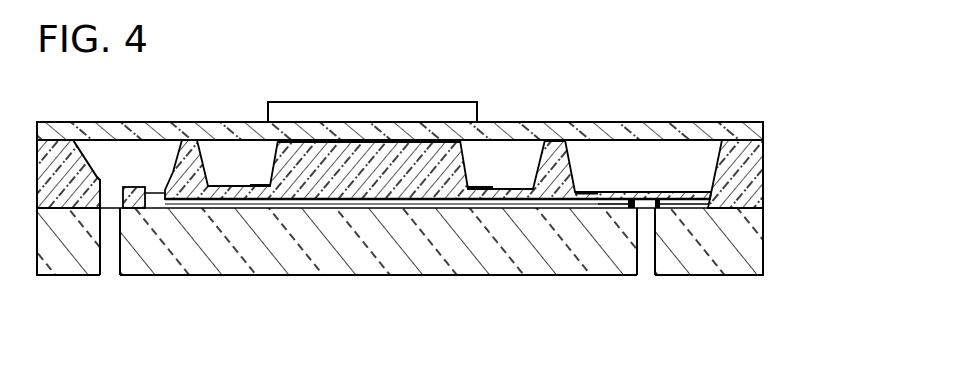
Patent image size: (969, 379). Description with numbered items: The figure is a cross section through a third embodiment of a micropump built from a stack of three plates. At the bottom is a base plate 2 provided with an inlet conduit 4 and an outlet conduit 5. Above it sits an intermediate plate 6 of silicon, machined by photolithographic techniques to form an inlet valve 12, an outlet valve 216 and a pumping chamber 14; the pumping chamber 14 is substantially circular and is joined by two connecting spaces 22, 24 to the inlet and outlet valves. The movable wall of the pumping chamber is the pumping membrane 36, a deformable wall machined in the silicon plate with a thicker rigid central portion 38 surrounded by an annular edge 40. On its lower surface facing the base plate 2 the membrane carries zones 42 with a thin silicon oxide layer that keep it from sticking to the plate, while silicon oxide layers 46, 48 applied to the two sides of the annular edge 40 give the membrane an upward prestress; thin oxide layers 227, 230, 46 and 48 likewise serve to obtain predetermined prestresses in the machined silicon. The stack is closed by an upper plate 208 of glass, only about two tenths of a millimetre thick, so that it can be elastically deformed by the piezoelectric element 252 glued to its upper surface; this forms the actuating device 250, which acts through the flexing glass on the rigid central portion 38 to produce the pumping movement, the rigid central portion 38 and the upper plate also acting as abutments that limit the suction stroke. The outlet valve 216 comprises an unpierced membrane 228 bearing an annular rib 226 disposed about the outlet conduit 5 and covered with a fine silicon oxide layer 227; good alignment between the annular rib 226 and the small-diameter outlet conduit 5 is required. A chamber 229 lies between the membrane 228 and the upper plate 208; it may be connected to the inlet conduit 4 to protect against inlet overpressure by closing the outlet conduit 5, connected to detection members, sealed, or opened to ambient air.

The base plate 2 is at (450, 242).
The inlet conduit 4 is at (110, 255).
The outlet conduit 5 is at (648, 262).
The intermediate plate 6 is at (768, 170).
The inlet valve 12 is at (156, 203).
The pumping chamber 14 is at (335, 209).
The connecting space 22 is at (172, 212).
The connecting space 24 is at (606, 213).
The pumping membrane 36 is at (470, 192).
The rigid central portion 38 is at (415, 168).
The annular edge 40 is at (527, 200).
The silicon oxide zones 42 is at (295, 204).
The silicon oxide layer 46 is at (258, 185).
The silicon oxide layer 48 is at (234, 205).
The upper plate 208 is at (733, 130).
The outlet valve 216 is at (629, 214).
The annular rib 226 is at (663, 197).
The silicon oxide layer 227 is at (658, 212).
The unpierced membrane 228 is at (615, 206).
The chamber 229 is at (643, 151).
The thin oxide layer 230 is at (590, 190).
The actuating device 250 is at (343, 96).
The piezoelectric element 252 is at (435, 110).